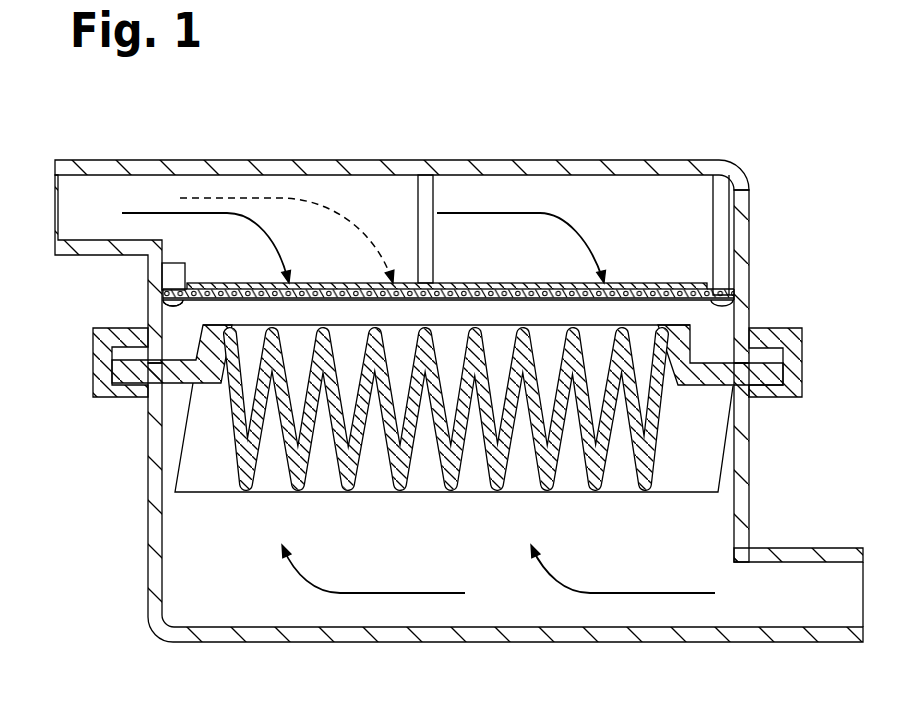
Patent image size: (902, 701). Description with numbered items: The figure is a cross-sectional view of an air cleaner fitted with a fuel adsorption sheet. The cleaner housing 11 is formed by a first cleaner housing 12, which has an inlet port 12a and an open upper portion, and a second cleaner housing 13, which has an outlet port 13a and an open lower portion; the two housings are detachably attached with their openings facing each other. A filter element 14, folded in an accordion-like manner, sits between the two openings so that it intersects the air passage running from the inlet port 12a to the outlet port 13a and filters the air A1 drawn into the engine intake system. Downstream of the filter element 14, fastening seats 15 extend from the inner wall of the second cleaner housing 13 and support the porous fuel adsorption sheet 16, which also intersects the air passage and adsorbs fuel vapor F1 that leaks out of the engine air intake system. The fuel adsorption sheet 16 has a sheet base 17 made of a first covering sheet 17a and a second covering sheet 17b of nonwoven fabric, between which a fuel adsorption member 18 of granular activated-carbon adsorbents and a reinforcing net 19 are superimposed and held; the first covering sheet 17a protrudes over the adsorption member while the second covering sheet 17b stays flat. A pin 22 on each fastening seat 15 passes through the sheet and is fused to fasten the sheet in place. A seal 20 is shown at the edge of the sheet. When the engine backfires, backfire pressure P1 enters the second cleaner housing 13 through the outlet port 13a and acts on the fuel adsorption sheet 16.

The cleaner housing 11 is at (57, 318).
The first cleaner housing 12 is at (147, 410).
The inlet port 12a is at (812, 562).
The second cleaner housing 13 is at (147, 318).
The outlet port 13a is at (96, 176).
The filter element 14 is at (230, 492).
The fastening seat 15 is at (173, 263).
The fuel adsorption sheet 16 is at (226, 283).
The sheet base 17 is at (322, 283).
The first covering sheet 17a is at (445, 283).
The second covering sheet 17b is at (648, 283).
The fuel adsorption member 18 is at (487, 283).
The reinforcing net 19 is at (522, 283).
The seal 20 is at (163, 291).
The pin 22 is at (181, 306).
The backfire pressure P1 is at (200, 211).
The fuel vapor F1 is at (283, 196).
The air A1 is at (372, 593).